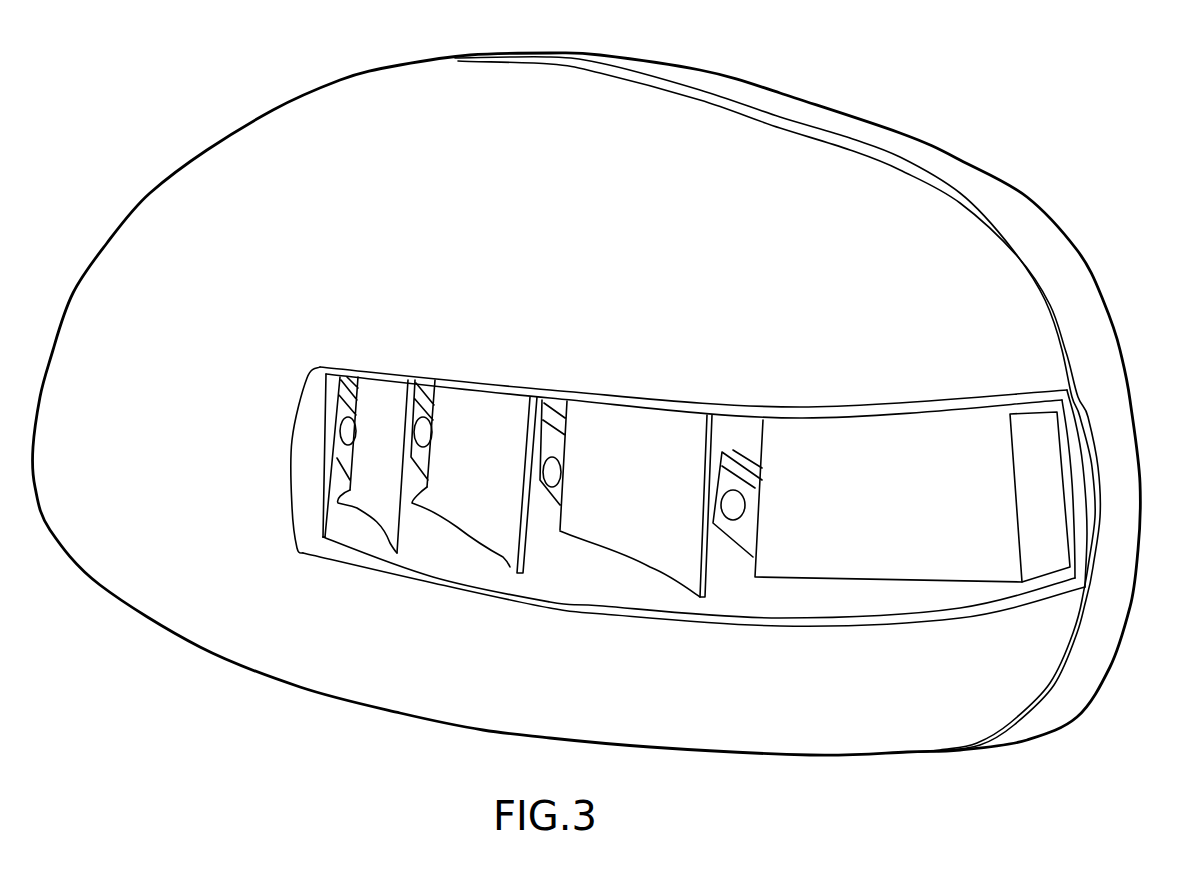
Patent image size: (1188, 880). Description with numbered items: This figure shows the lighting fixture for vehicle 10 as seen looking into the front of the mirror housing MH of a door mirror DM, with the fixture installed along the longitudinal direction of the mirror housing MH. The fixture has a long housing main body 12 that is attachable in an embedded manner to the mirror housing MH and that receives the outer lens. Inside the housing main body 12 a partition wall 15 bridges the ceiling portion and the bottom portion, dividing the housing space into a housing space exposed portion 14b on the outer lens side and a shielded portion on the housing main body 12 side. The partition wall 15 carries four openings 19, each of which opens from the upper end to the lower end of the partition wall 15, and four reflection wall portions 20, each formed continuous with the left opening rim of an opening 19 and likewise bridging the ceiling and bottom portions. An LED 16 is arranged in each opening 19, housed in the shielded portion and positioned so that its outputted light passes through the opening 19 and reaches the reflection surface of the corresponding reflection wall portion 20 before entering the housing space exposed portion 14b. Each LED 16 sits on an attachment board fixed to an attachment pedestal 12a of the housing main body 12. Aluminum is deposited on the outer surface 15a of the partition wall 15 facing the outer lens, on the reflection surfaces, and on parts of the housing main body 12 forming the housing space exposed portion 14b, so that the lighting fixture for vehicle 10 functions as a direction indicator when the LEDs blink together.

The door mirror DM is at (1078, 210).
The mirror housing MH is at (877, 190).
The lighting fixture for vehicle 10 is at (683, 480).
The housing main body 12 is at (858, 626).
The attachment pedestal 12a is at (908, 603).
The housing space exposed portion 14b is at (618, 568).
The partition wall 15 is at (803, 560).
The outer surface 15a is at (970, 582).
The LED 16 is at (350, 400).
The opening 19 is at (345, 485).
The reflection wall portion 20 is at (315, 525).